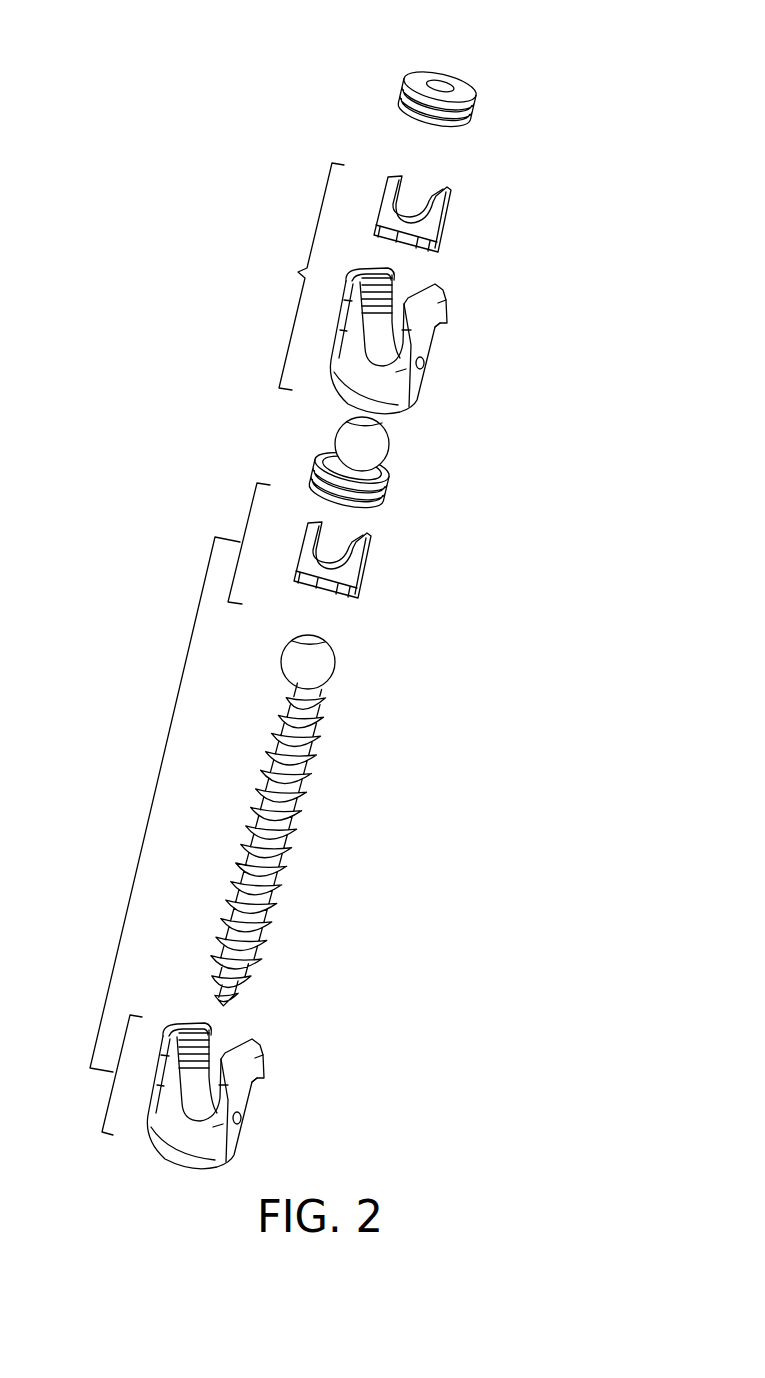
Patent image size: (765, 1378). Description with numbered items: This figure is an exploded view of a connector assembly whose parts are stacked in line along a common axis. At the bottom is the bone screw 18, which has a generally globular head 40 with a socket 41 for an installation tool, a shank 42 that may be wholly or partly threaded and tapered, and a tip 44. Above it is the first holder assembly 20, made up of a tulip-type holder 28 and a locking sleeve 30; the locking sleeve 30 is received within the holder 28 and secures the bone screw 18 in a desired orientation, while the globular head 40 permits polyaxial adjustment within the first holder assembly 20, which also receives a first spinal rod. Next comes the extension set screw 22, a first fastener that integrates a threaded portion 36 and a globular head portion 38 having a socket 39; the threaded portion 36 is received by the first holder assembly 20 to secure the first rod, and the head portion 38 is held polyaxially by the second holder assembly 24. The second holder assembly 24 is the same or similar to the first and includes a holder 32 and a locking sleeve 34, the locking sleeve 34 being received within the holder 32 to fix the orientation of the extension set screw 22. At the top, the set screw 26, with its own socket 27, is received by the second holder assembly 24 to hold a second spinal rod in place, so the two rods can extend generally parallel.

The bone screw 18 is at (308, 818).
The first holder assembly 20 is at (152, 802).
The extension set screw 22 is at (289, 454).
The second holder assembly 24 is at (298, 272).
The set screw 26 is at (464, 76).
The socket 27 is at (452, 82).
The holder 28 is at (242, 1132).
The locking sleeve 30 is at (357, 580).
The holder 32 is at (428, 345).
The locking sleeve 34 is at (437, 240).
The threaded portion 36 is at (388, 500).
The head portion 38 is at (401, 451).
The socket 39 is at (372, 423).
The head 40 is at (339, 660).
The socket 41 is at (313, 636).
The shank 42 is at (283, 848).
The tip 44 is at (228, 988).